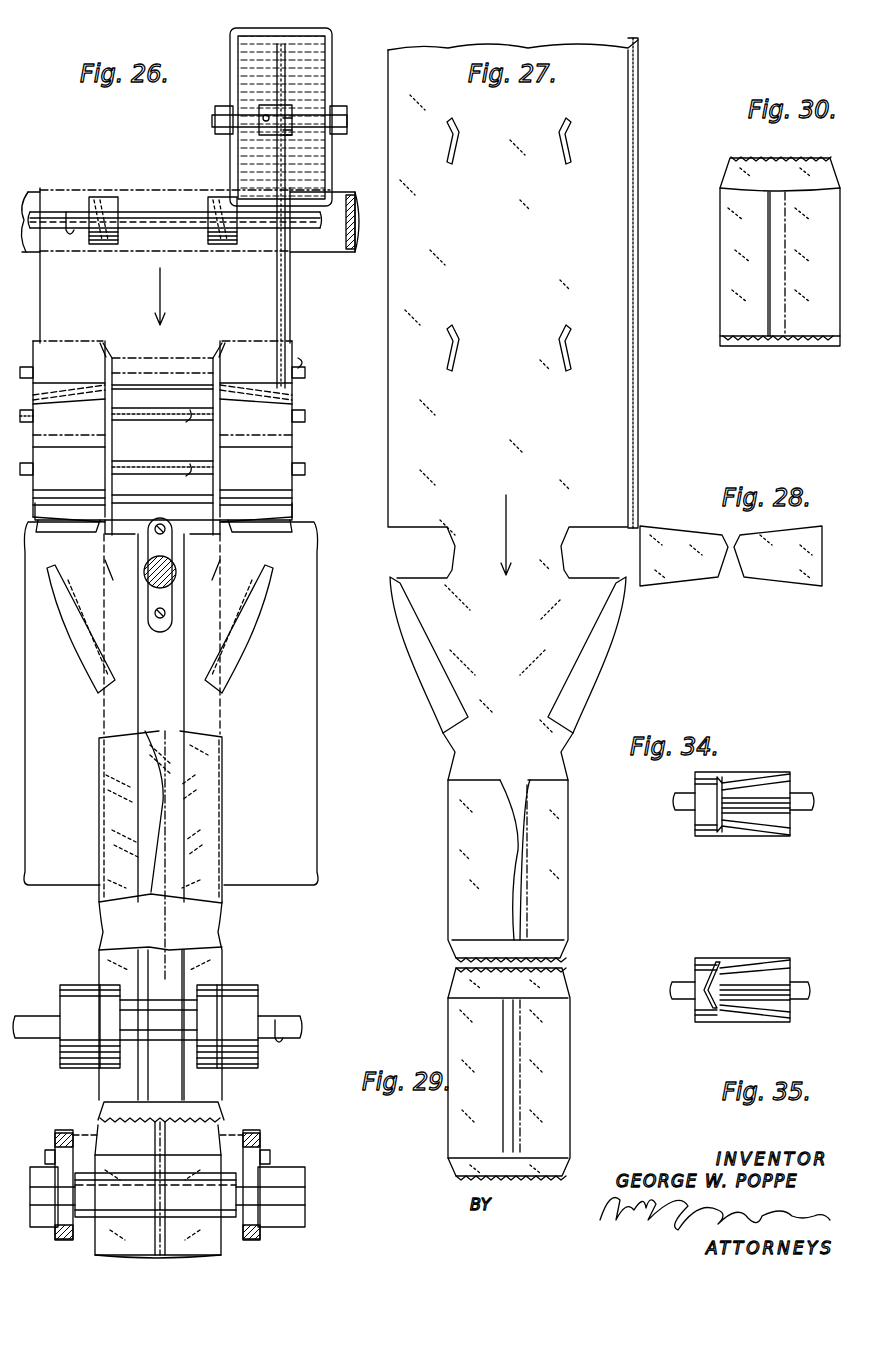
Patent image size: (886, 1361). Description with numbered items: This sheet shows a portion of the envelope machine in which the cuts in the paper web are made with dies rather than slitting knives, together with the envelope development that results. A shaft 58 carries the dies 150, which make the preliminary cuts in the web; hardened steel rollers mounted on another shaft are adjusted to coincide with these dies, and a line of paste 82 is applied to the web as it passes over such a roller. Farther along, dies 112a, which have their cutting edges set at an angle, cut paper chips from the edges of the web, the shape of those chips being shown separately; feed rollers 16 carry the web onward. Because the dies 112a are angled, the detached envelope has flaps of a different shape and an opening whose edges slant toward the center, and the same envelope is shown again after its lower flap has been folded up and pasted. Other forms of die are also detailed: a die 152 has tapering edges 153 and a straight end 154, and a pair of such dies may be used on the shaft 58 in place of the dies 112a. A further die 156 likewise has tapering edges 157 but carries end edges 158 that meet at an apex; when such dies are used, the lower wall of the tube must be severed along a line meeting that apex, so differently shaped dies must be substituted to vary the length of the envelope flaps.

In FIG. 26, the feed rollers 16 is at (70, 987).
In FIG. 26, the shaft 58 is at (190, 225).
In FIG. 26, the line of paste 82 is at (276, 305).
In FIG. 27, the line of paste 82 is at (628, 238).
In FIG. 26, the dies 112a is at (96, 425).
In FIG. 26, the die 150 is at (92, 201).
In FIG. 34, the die 152 is at (728, 772).
In FIG. 34, the tapering edges 153 is at (754, 774).
In FIG. 34, the straight end 154 is at (698, 822).
In FIG. 35, the roller 156 is at (735, 958).
In FIG. 35, the tapered flanges 157 is at (772, 962).
In FIG. 35, the end edges 158 is at (698, 1008).